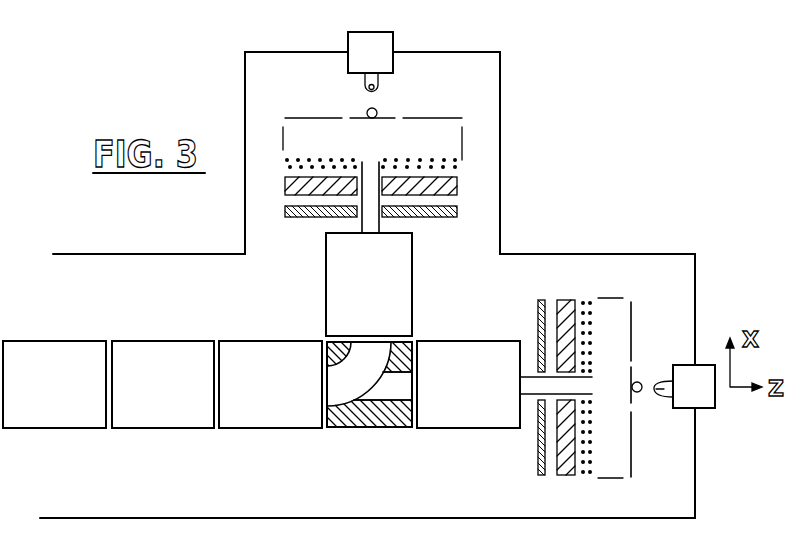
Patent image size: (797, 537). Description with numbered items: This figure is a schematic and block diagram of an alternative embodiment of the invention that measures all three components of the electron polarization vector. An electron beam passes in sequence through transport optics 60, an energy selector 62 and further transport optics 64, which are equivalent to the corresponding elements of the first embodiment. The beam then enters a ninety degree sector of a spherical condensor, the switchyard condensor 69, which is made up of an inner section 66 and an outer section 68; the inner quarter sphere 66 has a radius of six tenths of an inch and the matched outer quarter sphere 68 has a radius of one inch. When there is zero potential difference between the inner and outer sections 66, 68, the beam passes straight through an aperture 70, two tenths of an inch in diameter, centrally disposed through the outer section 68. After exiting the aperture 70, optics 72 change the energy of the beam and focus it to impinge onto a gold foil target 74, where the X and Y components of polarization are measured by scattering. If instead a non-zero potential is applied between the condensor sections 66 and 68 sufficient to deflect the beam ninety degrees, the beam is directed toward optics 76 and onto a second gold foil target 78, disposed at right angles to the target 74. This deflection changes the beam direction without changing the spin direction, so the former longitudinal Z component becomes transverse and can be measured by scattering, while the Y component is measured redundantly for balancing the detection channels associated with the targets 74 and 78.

The transport optics 60 is at (43, 428).
The energy selector 62 is at (157, 428).
The further transport optics 64 is at (268, 428).
The inner section 66 is at (335, 355).
The outer section 68 is at (366, 388).
The switchyard condensor 69 is at (338, 393).
The aperture 70 is at (405, 385).
The optics 72 is at (455, 428).
The gold foil target 74 is at (632, 373).
The optics 76 is at (412, 280).
The gold foil target 78 is at (378, 128).